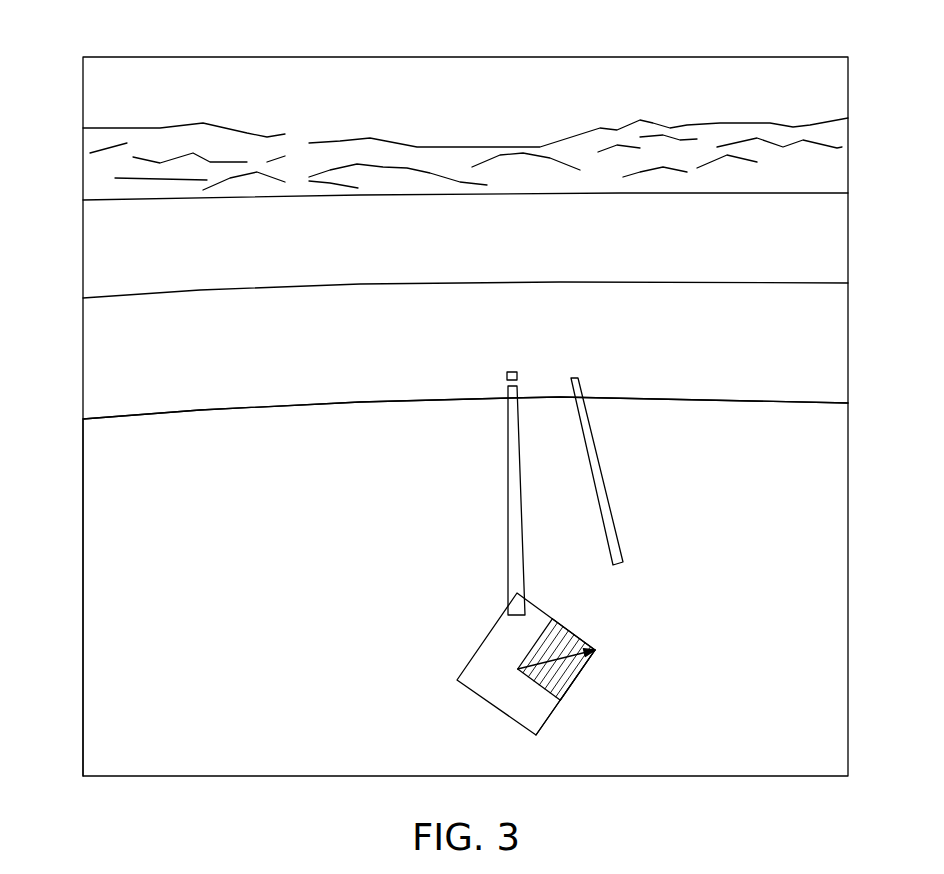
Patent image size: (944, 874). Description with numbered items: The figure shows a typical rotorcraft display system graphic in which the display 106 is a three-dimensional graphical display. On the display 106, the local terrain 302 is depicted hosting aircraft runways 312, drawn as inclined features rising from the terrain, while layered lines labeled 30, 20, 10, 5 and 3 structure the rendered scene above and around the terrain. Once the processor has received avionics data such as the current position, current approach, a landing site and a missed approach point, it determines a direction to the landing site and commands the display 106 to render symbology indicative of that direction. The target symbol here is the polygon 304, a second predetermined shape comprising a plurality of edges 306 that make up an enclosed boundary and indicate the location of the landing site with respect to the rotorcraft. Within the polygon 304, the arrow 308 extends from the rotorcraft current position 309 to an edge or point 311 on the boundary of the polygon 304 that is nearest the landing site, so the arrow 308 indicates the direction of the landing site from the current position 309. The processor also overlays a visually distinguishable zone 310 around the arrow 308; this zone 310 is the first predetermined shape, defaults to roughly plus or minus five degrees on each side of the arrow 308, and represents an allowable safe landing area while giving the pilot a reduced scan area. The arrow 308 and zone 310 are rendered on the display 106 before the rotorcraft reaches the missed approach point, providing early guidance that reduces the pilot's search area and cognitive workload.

The display 106 is at (308, 57).
The local terrain 302 is at (100, 605).
The water surface waves 30 is at (465, 132).
The water layer waves 20 is at (466, 152).
The water layer waves 10 is at (436, 175).
The subsurface layer boundary 5 is at (465, 280).
The seafloor boundary 3 is at (465, 399).
The aircraft runways 312 is at (603, 470).
The polygon 304 is at (497, 695).
The edges 306 is at (548, 717).
The rotorcraft current position 309 is at (517, 669).
The visually distinguishable zone 310 is at (567, 675).
The arrow 308 is at (560, 652).
The edge or point 311 is at (598, 649).